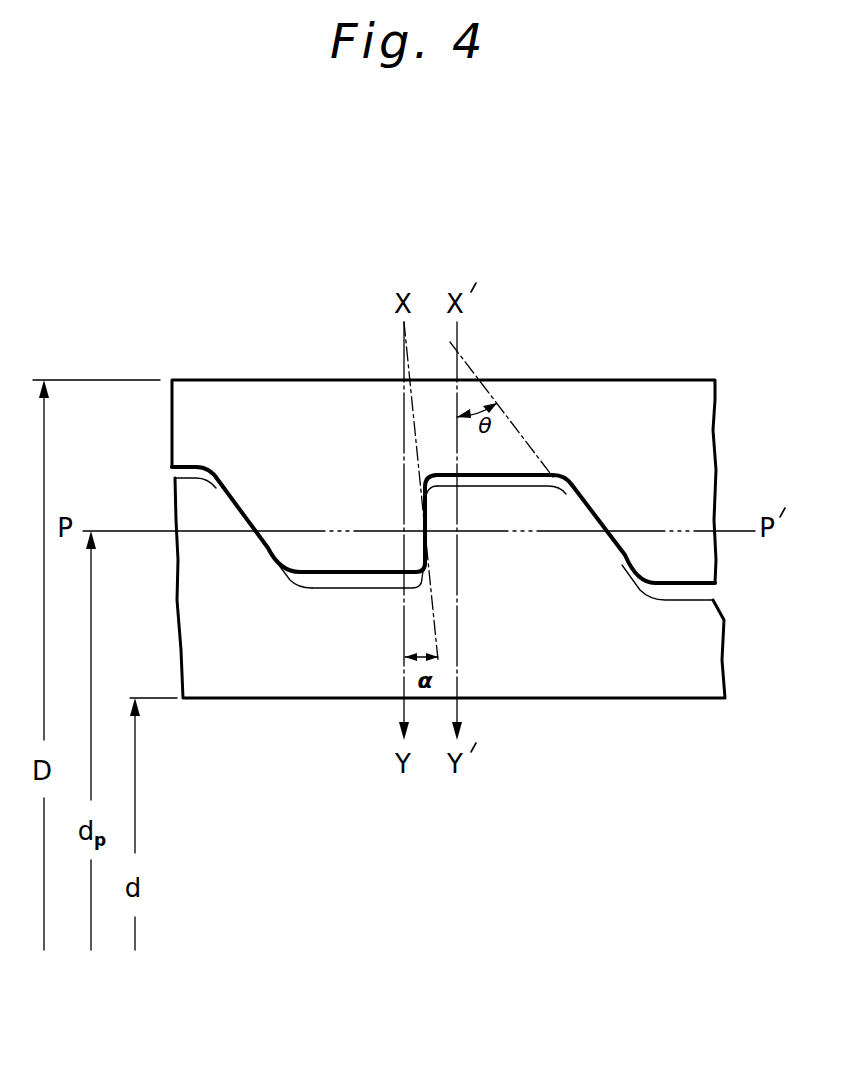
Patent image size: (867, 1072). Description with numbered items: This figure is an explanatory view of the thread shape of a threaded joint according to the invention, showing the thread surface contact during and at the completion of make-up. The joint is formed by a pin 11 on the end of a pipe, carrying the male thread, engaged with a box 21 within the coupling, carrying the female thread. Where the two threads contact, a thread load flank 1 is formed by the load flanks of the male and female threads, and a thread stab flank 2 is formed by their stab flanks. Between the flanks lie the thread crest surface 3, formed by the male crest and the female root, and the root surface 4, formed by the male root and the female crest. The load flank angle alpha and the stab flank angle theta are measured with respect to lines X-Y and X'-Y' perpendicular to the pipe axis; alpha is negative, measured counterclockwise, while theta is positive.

The thread load flank 1 is at (423, 527).
The thread stab flank 2 is at (617, 555).
The thread crest surface 3 is at (508, 483).
The root surface 4 is at (343, 580).
The pin 11 is at (618, 665).
The box 21 is at (602, 415).